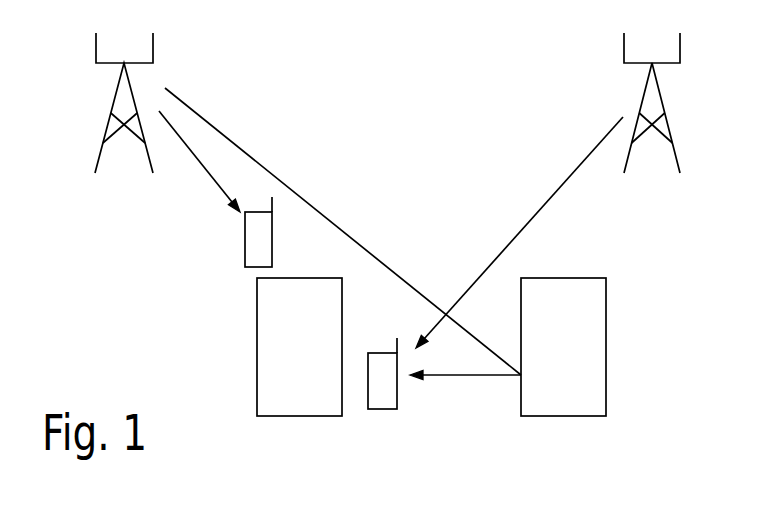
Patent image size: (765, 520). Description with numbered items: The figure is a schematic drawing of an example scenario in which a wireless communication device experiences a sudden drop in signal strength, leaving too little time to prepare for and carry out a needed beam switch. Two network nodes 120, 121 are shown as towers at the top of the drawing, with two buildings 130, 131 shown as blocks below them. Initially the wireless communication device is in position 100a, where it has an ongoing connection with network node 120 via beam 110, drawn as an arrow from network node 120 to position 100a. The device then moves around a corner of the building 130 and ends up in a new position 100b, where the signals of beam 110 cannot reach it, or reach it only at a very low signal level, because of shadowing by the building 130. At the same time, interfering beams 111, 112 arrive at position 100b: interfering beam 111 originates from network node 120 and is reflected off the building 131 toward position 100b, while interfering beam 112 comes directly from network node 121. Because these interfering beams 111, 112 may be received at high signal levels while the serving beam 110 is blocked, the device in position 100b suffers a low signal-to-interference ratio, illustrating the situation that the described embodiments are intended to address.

The network node 120 is at (108, 128).
The network node 121 is at (668, 125).
The beam 110 is at (212, 178).
The interfering beam 111 is at (318, 212).
The interfering beam 112 is at (520, 227).
The position 100a is at (243, 255).
The position 100b is at (398, 402).
The building 130 is at (299, 347).
The building 131 is at (508, 347).